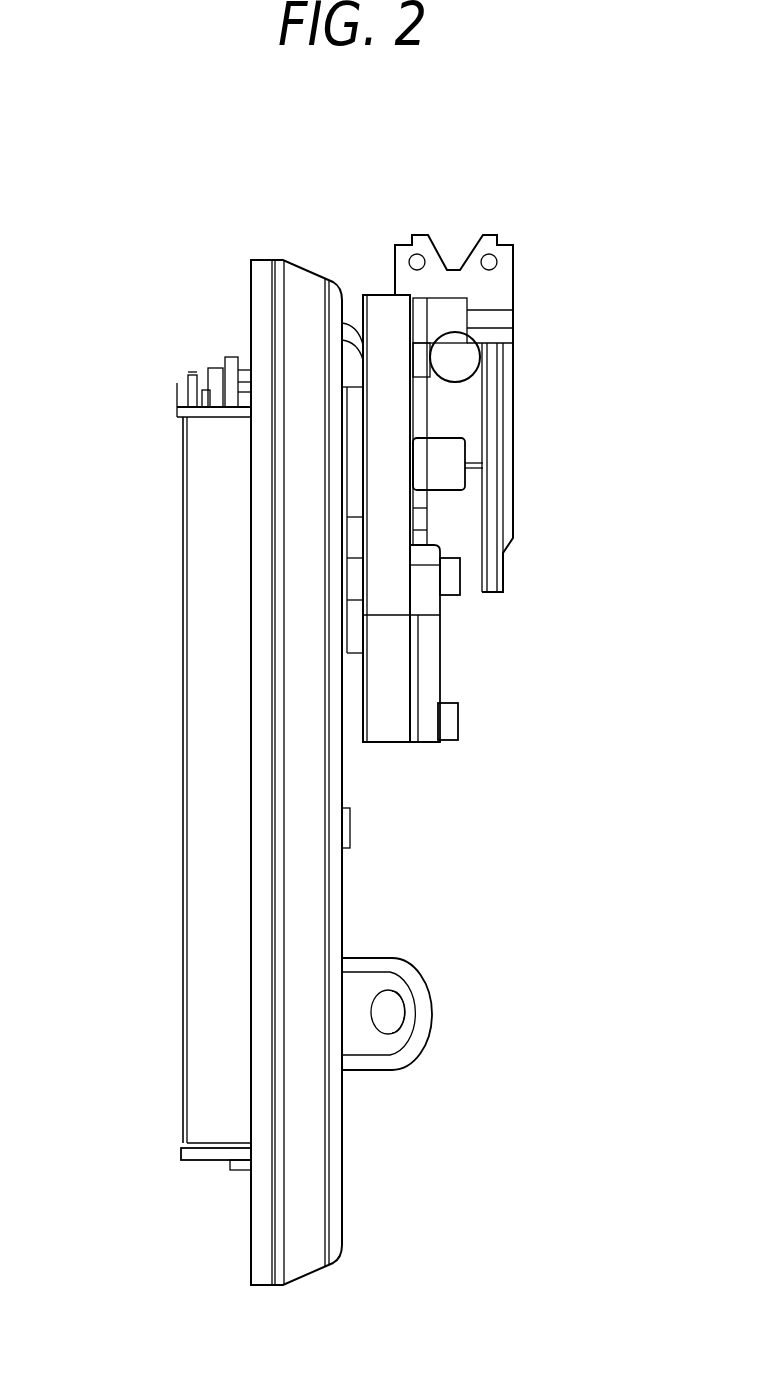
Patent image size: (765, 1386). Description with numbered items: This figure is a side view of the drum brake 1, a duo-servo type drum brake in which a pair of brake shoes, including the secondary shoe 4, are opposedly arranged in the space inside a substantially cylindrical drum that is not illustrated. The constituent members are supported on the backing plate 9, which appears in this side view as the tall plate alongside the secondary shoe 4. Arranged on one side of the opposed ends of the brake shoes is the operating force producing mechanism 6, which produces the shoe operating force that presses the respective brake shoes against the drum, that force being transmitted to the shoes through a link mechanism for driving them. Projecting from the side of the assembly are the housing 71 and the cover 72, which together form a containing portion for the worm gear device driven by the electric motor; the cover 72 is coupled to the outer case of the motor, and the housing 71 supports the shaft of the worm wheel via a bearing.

The drum brake 1 is at (232, 322).
The secondary shoe 4 is at (198, 922).
The operating force producing mechanism 6 is at (502, 572).
The backing plate 9 is at (302, 283).
The housing 71 is at (386, 725).
The cover 72 is at (430, 730).